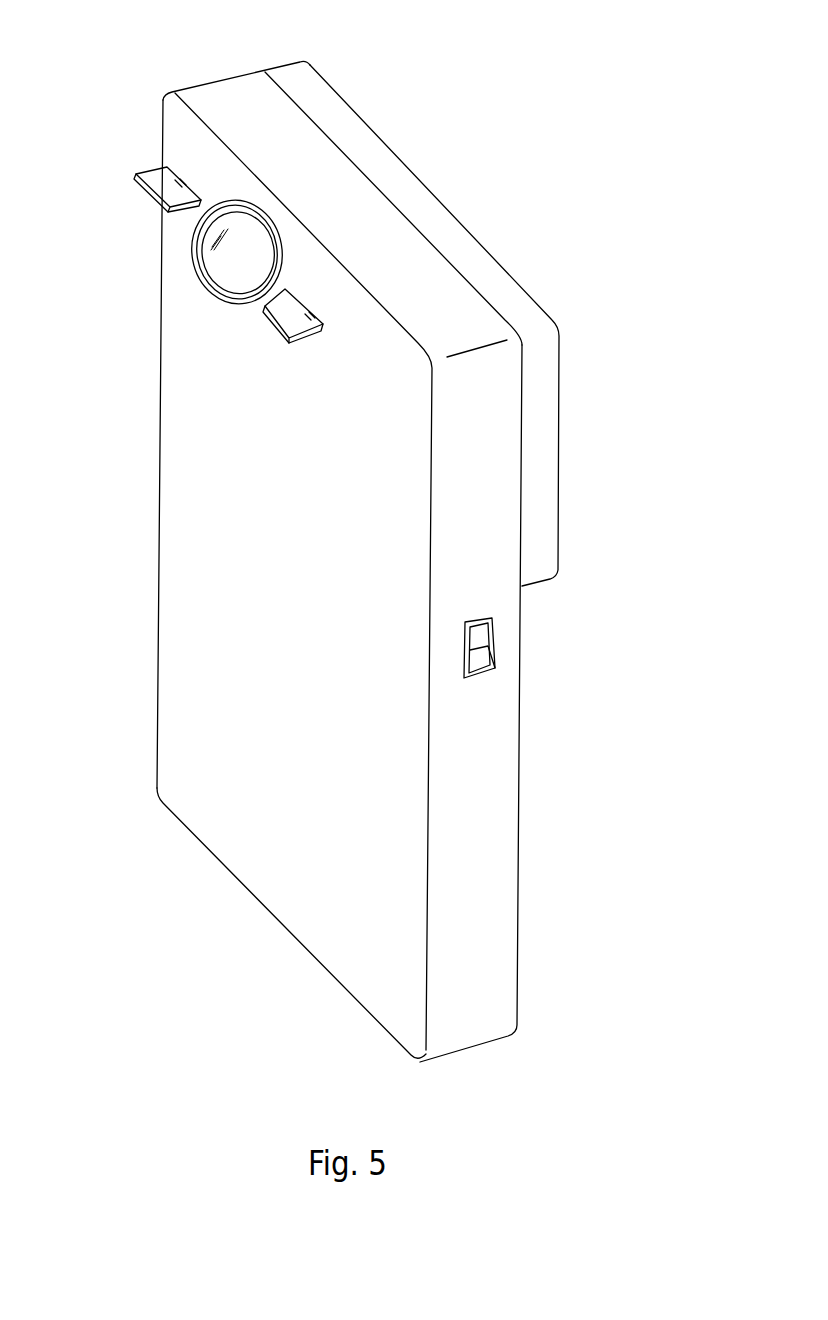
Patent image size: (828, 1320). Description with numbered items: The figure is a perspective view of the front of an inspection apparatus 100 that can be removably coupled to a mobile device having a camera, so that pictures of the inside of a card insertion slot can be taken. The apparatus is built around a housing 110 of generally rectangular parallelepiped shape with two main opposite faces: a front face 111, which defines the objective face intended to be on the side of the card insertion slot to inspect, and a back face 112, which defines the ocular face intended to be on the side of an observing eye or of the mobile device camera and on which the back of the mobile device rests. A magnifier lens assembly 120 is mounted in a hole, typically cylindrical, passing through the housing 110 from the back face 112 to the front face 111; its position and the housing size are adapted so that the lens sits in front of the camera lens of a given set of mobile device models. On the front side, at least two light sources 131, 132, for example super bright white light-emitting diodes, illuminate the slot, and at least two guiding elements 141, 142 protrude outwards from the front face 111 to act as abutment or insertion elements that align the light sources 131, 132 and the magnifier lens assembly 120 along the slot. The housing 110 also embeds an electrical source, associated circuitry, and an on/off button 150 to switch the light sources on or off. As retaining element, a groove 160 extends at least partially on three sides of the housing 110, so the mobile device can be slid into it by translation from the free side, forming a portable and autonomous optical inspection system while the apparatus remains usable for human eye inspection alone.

The inspection apparatus 100 is at (220, 79).
The housing 110 is at (243, 857).
The front face 111 is at (178, 752).
The back face 112 is at (517, 878).
The magnifier lens assembly 120 is at (242, 250).
The light source 131 is at (153, 189).
The light source 132 is at (303, 307).
The guiding element 141 is at (177, 185).
The guiding element 142 is at (317, 317).
The on/off button 150 is at (482, 657).
The groove 160 is at (547, 520).